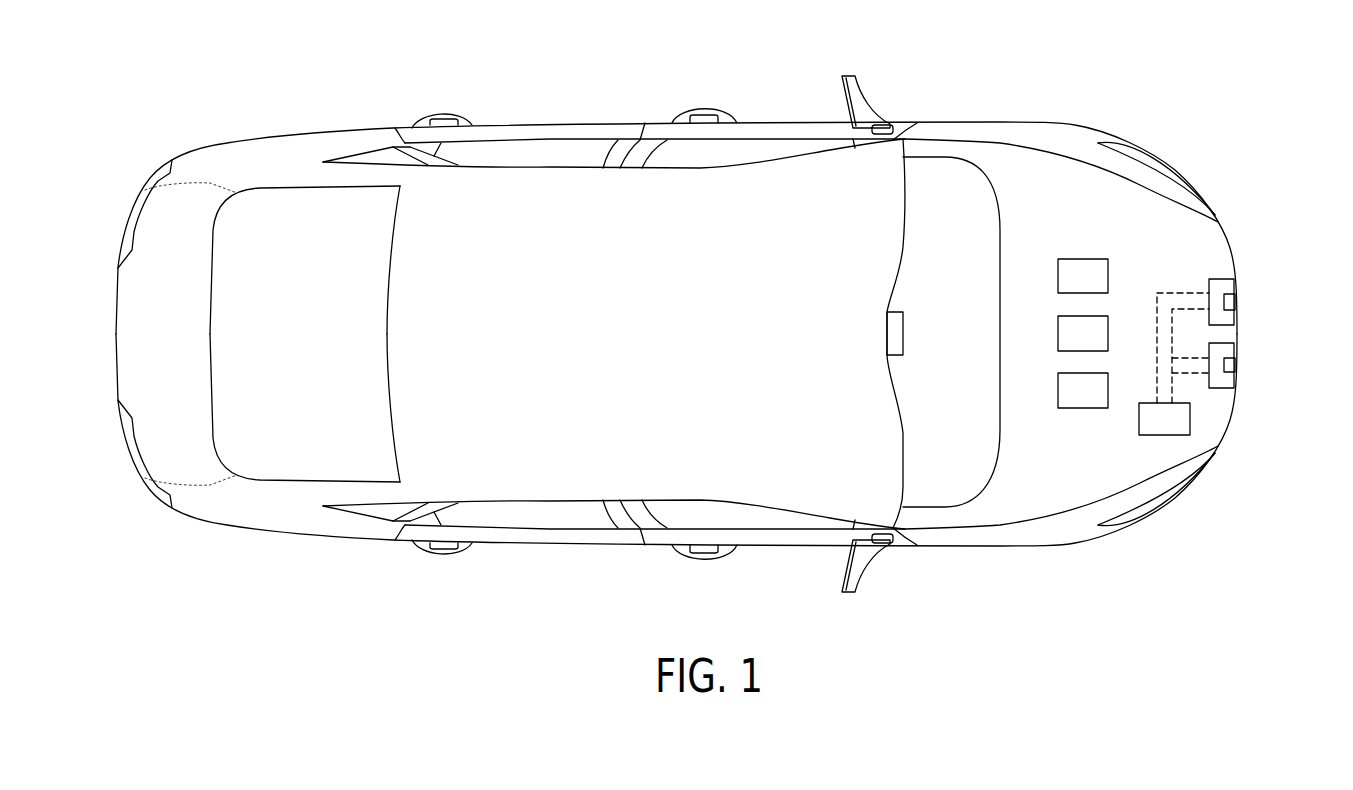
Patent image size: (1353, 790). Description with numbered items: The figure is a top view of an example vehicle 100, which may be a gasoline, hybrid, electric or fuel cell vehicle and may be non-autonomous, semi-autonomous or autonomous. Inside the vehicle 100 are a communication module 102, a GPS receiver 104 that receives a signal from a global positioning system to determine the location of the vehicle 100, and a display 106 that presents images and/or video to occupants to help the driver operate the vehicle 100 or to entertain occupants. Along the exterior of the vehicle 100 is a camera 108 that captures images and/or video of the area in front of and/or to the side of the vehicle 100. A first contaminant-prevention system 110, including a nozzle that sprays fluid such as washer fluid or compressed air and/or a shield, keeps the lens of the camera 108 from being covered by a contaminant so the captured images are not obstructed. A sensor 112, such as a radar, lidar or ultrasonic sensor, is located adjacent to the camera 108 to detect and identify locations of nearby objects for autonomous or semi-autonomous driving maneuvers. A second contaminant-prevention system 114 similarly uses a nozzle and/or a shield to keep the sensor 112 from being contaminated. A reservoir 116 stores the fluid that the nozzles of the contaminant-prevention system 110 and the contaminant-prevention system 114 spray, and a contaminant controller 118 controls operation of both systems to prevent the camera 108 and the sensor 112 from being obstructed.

The vehicle 100 is at (1078, 62).
The communication module 102 is at (1101, 287).
The GPS receiver 104 is at (1101, 344).
The display 106 is at (887, 333).
The camera 108 is at (1233, 300).
The contaminant-prevention system 110 is at (1228, 283).
The sensor 112 is at (1233, 367).
The contaminant-prevention system 114 is at (1228, 382).
The reservoir 116 is at (1163, 435).
The contaminant controller 118 is at (1101, 401).